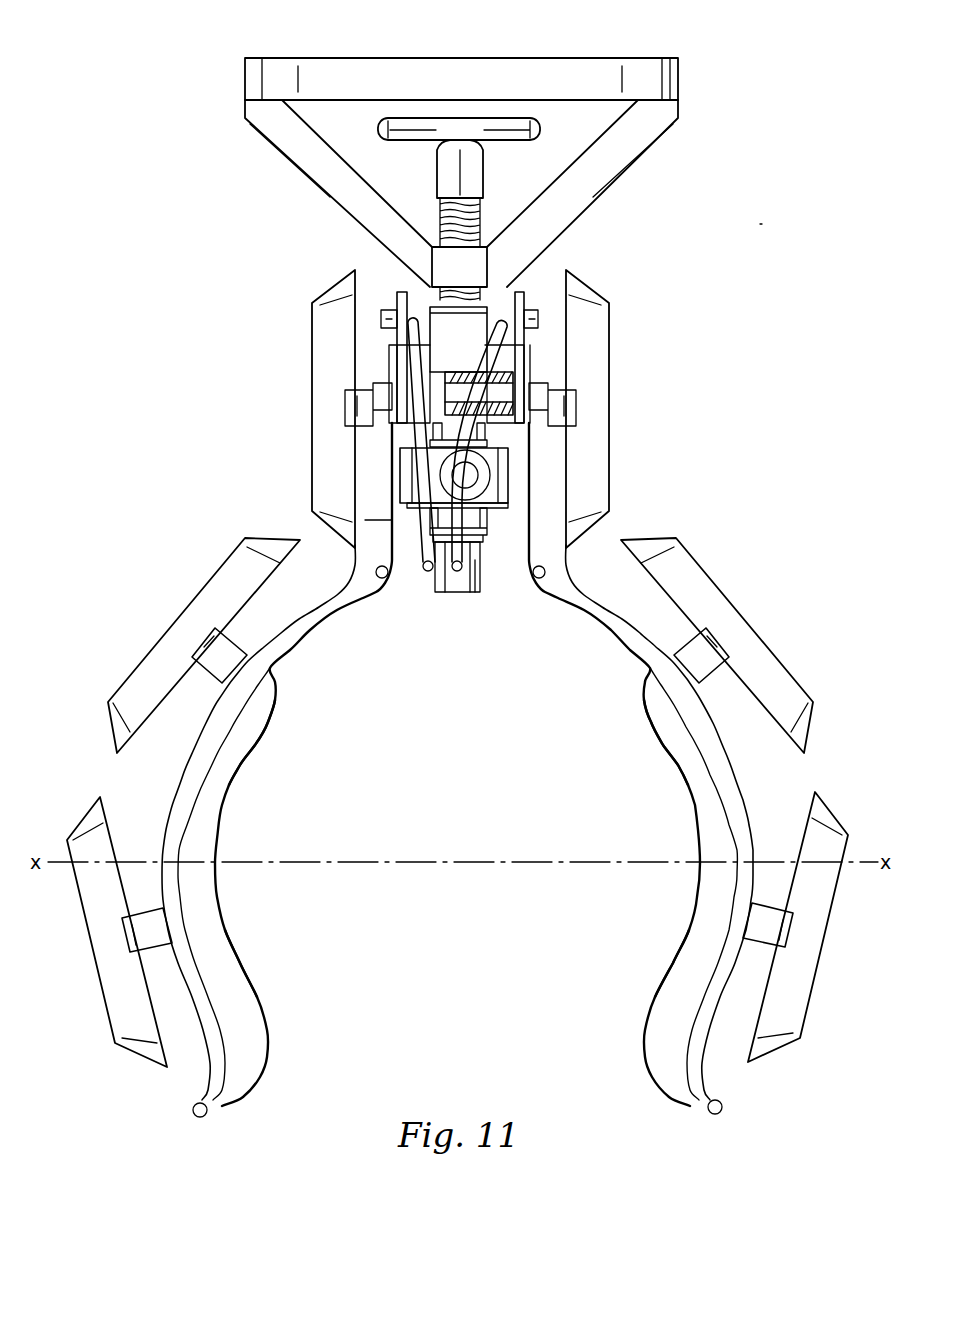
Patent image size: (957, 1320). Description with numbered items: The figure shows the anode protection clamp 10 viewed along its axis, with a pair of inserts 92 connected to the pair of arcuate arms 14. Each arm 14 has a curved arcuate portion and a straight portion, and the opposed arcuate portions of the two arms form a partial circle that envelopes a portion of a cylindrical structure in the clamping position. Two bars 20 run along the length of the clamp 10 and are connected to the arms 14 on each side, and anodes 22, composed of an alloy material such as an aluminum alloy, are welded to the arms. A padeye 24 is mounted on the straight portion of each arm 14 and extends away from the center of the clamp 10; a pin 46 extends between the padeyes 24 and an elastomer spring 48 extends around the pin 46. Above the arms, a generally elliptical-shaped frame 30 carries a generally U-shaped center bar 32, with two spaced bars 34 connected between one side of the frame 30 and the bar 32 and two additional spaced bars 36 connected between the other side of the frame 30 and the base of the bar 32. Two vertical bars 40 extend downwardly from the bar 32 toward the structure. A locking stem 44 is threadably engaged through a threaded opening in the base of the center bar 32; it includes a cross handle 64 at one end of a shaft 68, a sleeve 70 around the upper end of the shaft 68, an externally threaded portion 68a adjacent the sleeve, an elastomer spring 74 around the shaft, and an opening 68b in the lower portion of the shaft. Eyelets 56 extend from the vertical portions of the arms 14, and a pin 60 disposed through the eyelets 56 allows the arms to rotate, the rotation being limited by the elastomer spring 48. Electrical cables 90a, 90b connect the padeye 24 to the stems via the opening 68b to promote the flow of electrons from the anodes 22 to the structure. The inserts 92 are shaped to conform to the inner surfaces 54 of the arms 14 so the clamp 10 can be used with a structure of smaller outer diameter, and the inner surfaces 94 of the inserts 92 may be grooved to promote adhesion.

The anode protection clamp 10 is at (762, 218).
The arcuate arms 14 is at (314, 641).
The bars 20 is at (381, 580).
The anodes 22 is at (346, 422).
The padeye 24 is at (522, 298).
The frame 30 is at (385, 54).
The center bar 32 is at (488, 262).
The spaced bars 34 is at (632, 163).
The additional spaced bars 36 is at (293, 163).
The vertical bars 40 is at (438, 540).
The locking elements or stems 44 is at (476, 110).
The pin 46 is at (522, 374).
The elastomer spring 48 is at (467, 369).
The inner surfaces 54 is at (273, 660).
The eyelets 56 is at (400, 498).
The pin 60 is at (447, 458).
The cross handle 64 is at (395, 130).
The shaft 68 is at (486, 548).
The externally threaded portion 68a is at (482, 214).
The opening 68b is at (483, 585).
The sleeve 70 is at (436, 170).
The elastomer spring 74 is at (395, 348).
The electrical cable 90a is at (512, 320).
The electrical cable 90b is at (424, 572).
The inserts 92 is at (240, 776).
The inner surfaces 94 is at (242, 960).